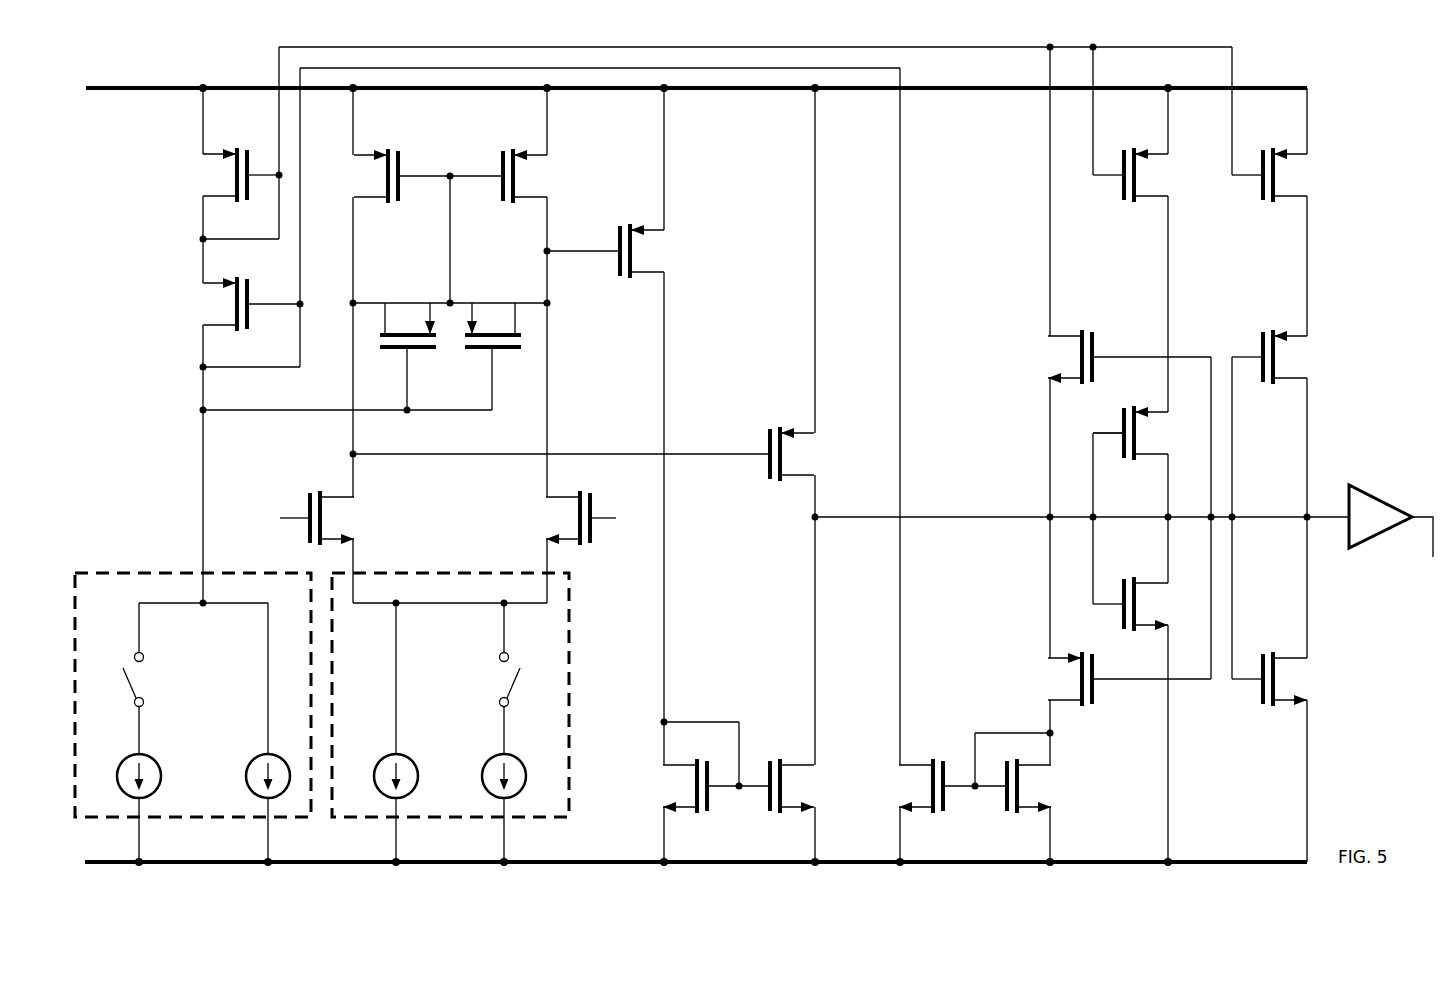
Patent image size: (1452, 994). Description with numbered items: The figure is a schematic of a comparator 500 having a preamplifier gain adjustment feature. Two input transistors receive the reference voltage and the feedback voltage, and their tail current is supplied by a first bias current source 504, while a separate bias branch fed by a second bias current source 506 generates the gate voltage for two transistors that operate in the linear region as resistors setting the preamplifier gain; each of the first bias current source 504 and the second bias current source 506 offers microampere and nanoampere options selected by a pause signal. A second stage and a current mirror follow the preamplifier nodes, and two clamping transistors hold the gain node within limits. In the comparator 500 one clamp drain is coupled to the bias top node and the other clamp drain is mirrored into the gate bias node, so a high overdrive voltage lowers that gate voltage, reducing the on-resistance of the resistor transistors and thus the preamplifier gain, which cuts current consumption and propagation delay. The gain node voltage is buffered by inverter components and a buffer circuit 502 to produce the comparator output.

The comparator 500 is at (262, 51).
The buffer circuit 502 is at (1383, 498).
The first bias current source 504 is at (440, 562).
The second bias current source 506 is at (122, 565).